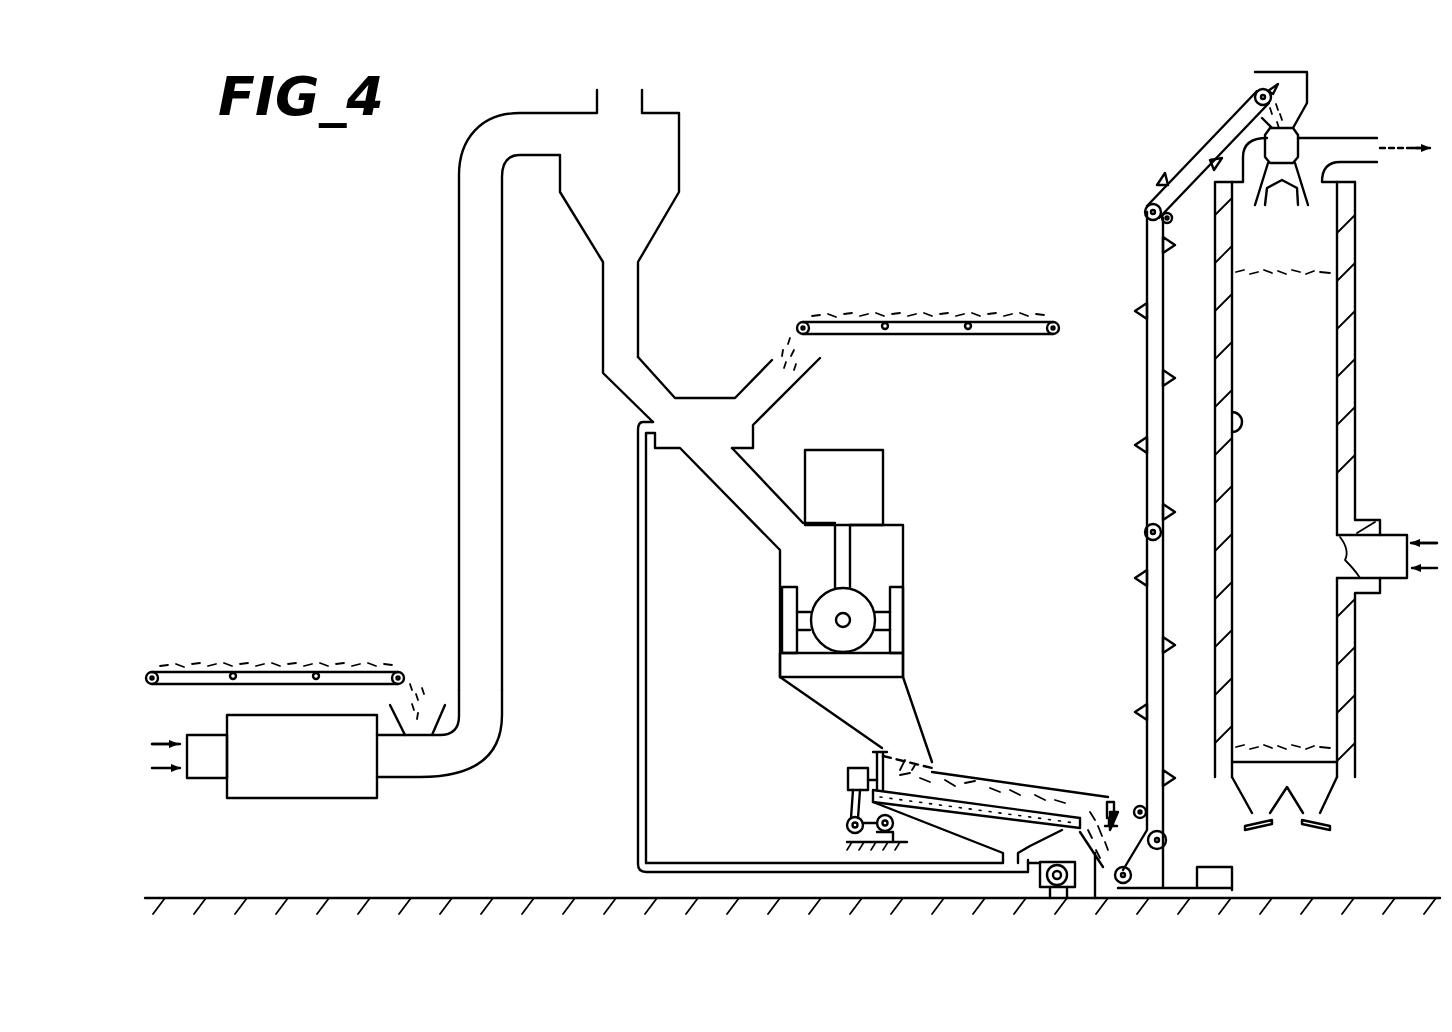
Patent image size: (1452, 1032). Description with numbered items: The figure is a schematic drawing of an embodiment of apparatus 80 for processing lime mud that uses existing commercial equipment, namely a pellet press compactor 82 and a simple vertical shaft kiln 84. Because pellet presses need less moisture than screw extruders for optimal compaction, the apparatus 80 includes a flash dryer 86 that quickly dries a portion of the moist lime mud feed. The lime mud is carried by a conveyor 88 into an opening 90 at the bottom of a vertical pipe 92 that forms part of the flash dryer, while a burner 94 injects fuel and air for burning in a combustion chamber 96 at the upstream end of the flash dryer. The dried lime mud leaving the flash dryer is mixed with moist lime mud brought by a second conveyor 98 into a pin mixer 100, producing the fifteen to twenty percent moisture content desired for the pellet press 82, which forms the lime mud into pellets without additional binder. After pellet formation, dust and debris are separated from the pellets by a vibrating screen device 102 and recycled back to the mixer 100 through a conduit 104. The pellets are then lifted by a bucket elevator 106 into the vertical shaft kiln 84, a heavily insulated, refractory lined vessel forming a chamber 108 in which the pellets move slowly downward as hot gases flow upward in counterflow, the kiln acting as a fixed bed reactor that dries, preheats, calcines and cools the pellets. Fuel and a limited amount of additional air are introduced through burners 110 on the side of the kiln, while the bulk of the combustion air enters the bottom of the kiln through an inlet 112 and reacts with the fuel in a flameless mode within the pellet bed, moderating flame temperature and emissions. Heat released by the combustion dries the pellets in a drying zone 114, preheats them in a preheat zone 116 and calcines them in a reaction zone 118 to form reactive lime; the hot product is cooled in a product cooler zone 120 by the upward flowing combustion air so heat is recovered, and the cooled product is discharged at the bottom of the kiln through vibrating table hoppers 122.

The apparatus 80 is at (962, 178).
The pellet press compactor 82 is at (915, 562).
The vertical shaft kiln 84 is at (1211, 278).
The flash dryer 86 is at (428, 782).
The conveyor 88 is at (297, 677).
The opening 90 is at (442, 707).
The vertical pipe 92 is at (503, 635).
The burner 94 is at (210, 783).
The combustion chamber 96 is at (310, 798).
The conveyor 98 is at (853, 328).
The pin mixer 100 is at (708, 391).
The vibrating screen device 102 is at (1030, 778).
The conduit 104 is at (648, 760).
The bucket elevator 106 is at (1142, 592).
The chamber 108 is at (1232, 412).
The burners 110 is at (1393, 580).
The inlet 112 is at (1331, 814).
The drying zone 114 is at (1307, 305).
The preheat zone 116 is at (1300, 415).
The reaction zone 118 is at (1298, 550).
The product cooler zone 120 is at (1297, 678).
The vibrating table hoppers 122 is at (1318, 830).